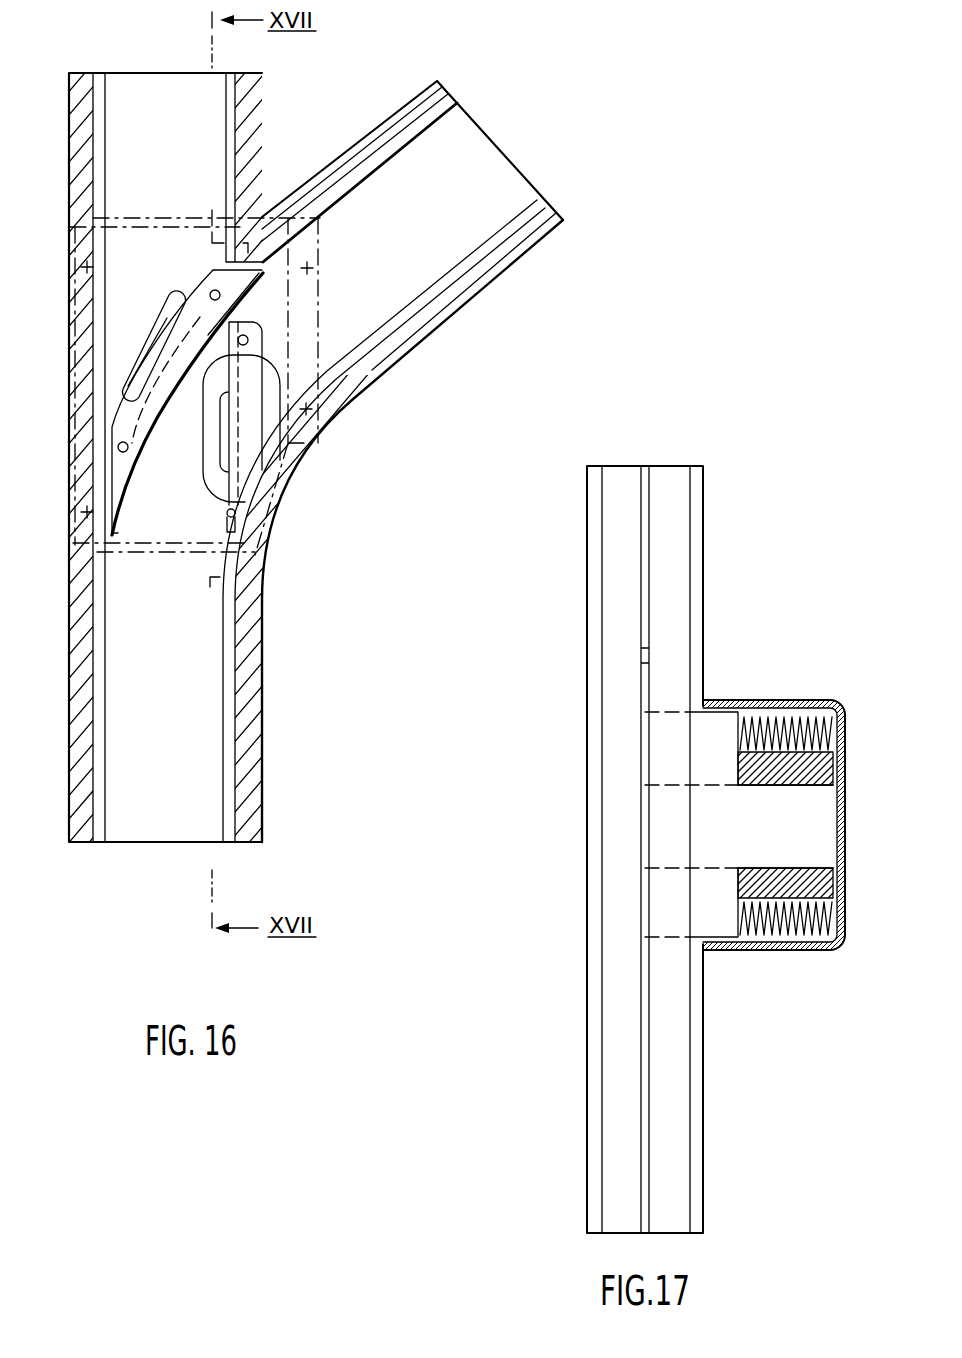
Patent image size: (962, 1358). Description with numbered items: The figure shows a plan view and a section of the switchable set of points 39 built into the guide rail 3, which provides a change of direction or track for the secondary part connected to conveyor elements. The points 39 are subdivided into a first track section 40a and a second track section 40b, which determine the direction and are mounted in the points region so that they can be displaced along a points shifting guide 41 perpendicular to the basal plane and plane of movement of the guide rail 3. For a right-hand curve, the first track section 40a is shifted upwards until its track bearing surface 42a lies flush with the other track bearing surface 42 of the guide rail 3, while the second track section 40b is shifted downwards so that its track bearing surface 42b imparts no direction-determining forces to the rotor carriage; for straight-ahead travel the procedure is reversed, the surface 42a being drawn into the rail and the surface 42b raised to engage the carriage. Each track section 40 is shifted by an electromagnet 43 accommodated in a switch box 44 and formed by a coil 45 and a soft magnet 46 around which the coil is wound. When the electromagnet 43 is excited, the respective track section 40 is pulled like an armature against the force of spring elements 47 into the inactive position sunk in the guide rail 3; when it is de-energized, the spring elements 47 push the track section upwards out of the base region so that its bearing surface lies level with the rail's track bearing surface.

In FIG. 16, the guide rail 3 is at (414, 110).
In FIG. 16, the set of points 39 is at (306, 501).
In FIG. 17, the track section 40 is at (665, 740).
In FIG. 16, the first track section 40a is at (198, 302).
In FIG. 16, the second track section 40b is at (248, 375).
In FIG. 16, the points shifting guide 41 is at (222, 294).
In FIG. 16, the track bearing surface 42 is at (507, 223).
In FIG. 16, the track bearing surface 42a is at (148, 413).
In FIG. 16, the track bearing surface 42b is at (224, 505).
In FIG. 17, the electromagnet 43 is at (852, 795).
In FIG. 17, the switch box 44 is at (827, 700).
In FIG. 16, the coil 45 is at (130, 350).
In FIG. 17, the coil 45 is at (825, 888).
In FIG. 17, the soft magnet 46 is at (813, 795).
In FIG. 17, the spring elements 47 is at (771, 723).